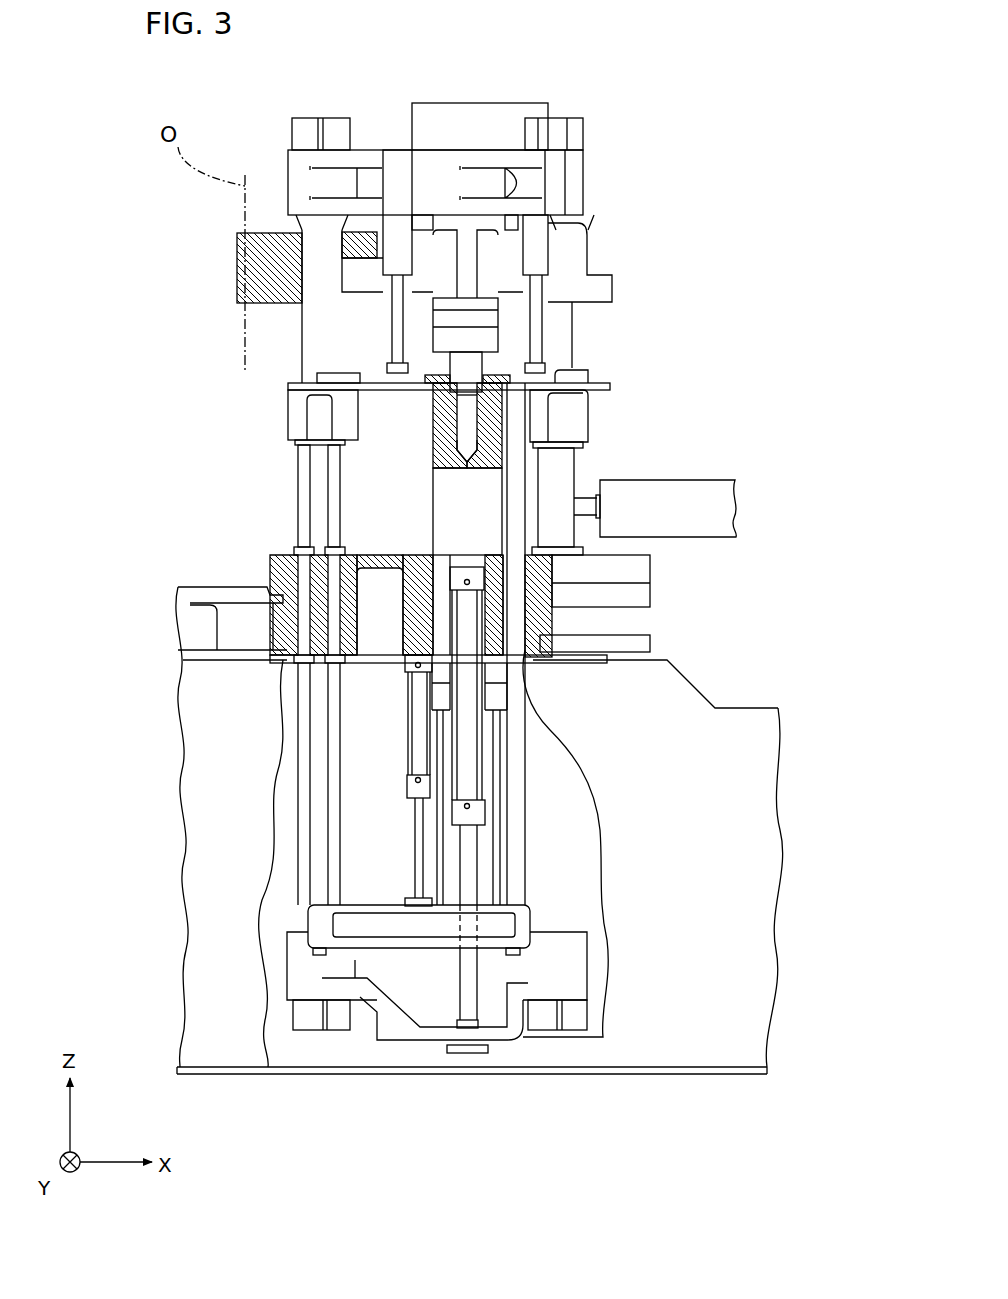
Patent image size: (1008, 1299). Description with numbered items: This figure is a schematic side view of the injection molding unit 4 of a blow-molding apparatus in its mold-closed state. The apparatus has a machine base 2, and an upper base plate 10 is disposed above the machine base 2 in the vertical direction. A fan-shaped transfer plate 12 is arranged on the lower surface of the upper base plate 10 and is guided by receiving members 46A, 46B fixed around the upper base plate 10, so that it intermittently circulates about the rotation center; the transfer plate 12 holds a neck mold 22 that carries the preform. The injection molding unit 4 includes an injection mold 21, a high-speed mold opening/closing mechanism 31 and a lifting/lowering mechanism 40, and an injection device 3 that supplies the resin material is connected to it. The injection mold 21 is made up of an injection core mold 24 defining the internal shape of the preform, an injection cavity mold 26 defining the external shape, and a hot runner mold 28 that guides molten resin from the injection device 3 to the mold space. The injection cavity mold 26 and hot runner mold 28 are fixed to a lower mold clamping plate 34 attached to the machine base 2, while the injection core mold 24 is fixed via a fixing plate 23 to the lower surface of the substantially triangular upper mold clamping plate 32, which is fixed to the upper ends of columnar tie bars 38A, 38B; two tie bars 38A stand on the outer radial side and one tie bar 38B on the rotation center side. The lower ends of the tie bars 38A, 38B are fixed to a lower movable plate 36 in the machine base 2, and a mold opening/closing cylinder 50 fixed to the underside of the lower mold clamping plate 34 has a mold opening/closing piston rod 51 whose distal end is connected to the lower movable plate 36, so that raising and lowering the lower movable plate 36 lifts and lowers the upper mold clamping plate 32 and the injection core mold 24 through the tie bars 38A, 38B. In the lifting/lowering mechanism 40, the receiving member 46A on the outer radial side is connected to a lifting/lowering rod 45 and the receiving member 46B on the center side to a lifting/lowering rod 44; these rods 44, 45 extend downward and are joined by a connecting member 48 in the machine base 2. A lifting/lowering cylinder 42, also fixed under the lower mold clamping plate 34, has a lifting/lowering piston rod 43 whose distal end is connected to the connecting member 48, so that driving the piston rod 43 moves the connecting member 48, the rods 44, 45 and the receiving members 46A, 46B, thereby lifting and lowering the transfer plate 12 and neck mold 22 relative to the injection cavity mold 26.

The machine base 2 is at (665, 686).
The injection device 3 is at (705, 490).
The injection molding unit 4 is at (698, 332).
The upper base plate 10 is at (578, 283).
The transfer plate 12 is at (553, 373).
The injection mold 21 is at (355, 454).
The neck mold 22 is at (455, 395).
The fixing plate 23 is at (470, 260).
The injection core mold 24 is at (440, 452).
The injection cavity mold 26 is at (447, 463).
The hot runner mold 28 is at (454, 532).
The high-speed mold opening/closing mechanism 31 is at (494, 812).
The upper mold clamping plate 32 is at (537, 188).
The lower mold clamping plate 34 is at (617, 573).
The lower movable plate 36 is at (510, 970).
The tie bar 38A is at (562, 477).
The tie bar 38B is at (305, 512).
The lifting/lowering mechanism 40 is at (343, 949).
The lifting/lowering cylinder 42 is at (417, 728).
The lifting/lowering piston rod 43 is at (415, 847).
The lifting/lowering rod 44 is at (318, 703).
The lifting/lowering rod 45 is at (521, 860).
The receiving member 46A is at (570, 425).
The receiving member 46B is at (298, 424).
The connecting member 48 is at (400, 930).
The mold opening/closing cylinder 50 is at (465, 770).
The mold opening/closing piston rod 51 is at (475, 987).